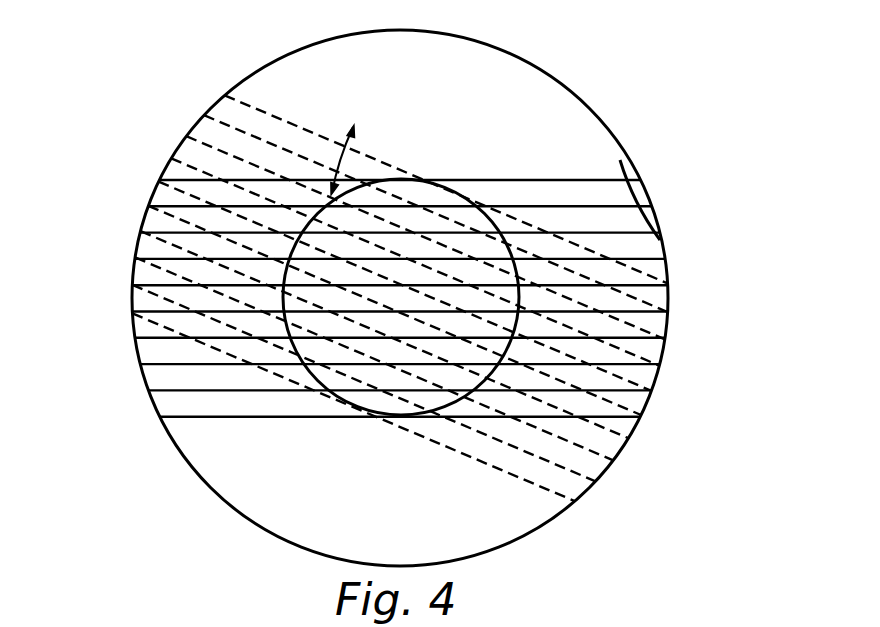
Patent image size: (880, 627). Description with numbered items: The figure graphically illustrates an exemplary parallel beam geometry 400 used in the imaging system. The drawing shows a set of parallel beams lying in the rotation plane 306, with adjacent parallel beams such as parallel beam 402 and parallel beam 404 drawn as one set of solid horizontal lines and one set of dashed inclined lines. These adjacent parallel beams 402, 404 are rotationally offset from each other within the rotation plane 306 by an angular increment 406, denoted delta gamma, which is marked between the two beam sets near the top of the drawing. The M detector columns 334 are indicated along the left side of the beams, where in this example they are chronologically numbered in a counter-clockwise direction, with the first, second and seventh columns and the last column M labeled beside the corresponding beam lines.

The parallel beam geometry 400 is at (389, 292).
The rotation plane 306 is at (283, 62).
The parallel beam 402 is at (634, 156).
The detector columns 334 is at (120, 177).
The parallel beam 404 is at (516, 508).
The angular increment 406 is at (375, 144).